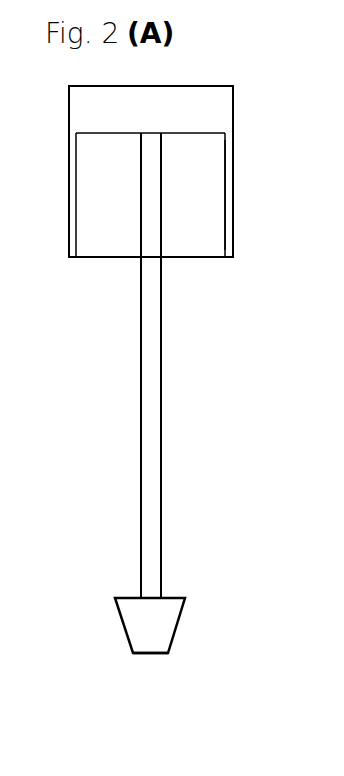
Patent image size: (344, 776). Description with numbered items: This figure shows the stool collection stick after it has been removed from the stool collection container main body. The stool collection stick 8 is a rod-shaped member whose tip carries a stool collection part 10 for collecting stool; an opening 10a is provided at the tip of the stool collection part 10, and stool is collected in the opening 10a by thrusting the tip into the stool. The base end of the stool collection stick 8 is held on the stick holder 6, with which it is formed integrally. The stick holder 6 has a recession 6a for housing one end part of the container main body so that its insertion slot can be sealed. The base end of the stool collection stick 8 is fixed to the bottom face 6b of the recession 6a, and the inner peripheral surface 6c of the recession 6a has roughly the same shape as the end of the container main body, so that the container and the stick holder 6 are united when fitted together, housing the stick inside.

The stick holder 6 is at (223, 85).
The recession 6a is at (183, 233).
The bottom face 6b is at (183, 133).
The inner peripheral surface 6c is at (226, 212).
The stool collection stick 8 is at (152, 373).
The stool collection part 10 is at (178, 625).
The opening 10a is at (152, 655).